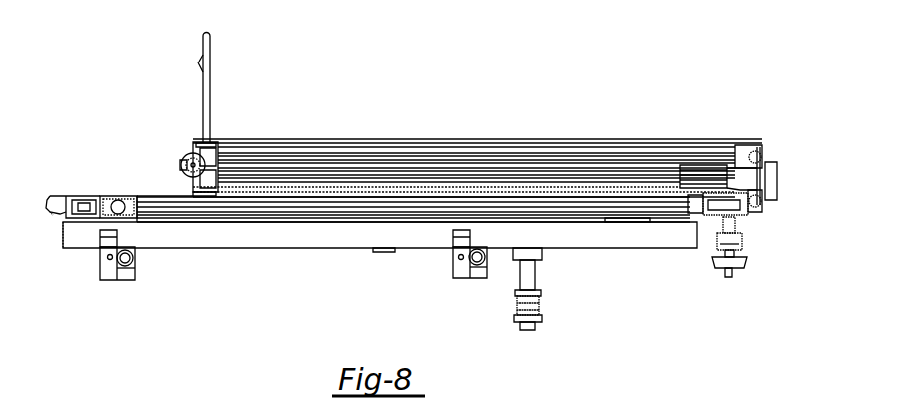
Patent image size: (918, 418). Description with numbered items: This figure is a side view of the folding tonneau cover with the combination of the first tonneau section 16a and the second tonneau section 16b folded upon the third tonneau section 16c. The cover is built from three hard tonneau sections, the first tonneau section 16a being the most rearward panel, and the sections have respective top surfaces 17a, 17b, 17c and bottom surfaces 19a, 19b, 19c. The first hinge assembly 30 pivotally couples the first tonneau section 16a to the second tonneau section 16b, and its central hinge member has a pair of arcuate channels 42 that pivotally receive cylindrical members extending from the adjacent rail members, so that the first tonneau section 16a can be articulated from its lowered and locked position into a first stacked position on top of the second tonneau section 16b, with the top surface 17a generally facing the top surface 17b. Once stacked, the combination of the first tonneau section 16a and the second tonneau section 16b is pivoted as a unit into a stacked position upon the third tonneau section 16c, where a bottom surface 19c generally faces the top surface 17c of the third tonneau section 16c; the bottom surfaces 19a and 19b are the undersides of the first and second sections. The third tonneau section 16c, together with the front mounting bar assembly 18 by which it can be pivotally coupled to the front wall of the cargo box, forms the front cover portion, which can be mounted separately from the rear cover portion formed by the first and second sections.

The front mounting bar assembly 18 is at (100, 196).
The first hinge assembly 30 is at (185, 151).
The top surface of third tonneau section 17c is at (177, 192).
The first tonneau section 16a is at (363, 182).
The second tonneau section 16b is at (492, 148).
The bottom surface of second tonneau section 19b is at (565, 140).
The top surface of first tonneau section 17a is at (650, 166).
The top surface of second tonneau section 17b is at (728, 178).
The third tonneau section 16c is at (208, 207).
The bottom surface of third tonneau section 19c is at (286, 215).
The bottom surface of first tonneau section 19a is at (568, 188).
The arcuate channels 42 is at (740, 242).